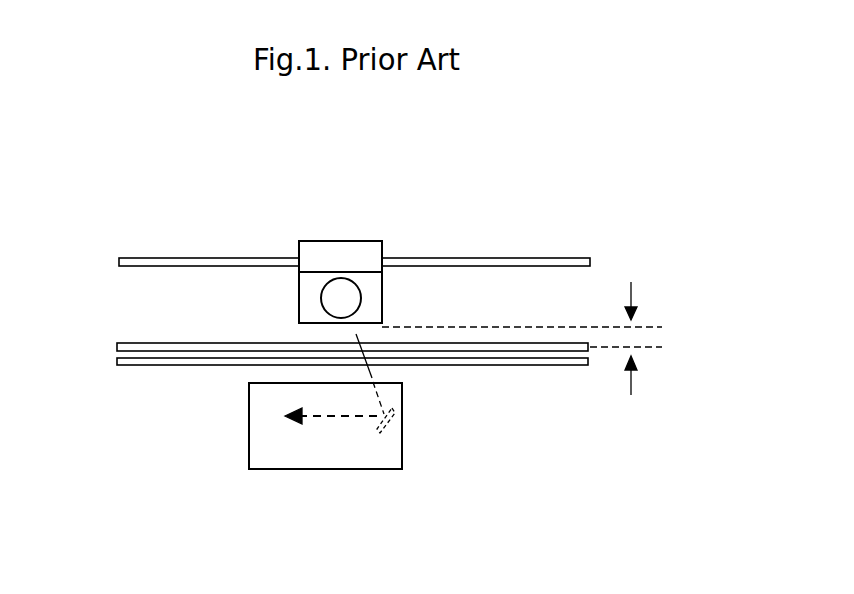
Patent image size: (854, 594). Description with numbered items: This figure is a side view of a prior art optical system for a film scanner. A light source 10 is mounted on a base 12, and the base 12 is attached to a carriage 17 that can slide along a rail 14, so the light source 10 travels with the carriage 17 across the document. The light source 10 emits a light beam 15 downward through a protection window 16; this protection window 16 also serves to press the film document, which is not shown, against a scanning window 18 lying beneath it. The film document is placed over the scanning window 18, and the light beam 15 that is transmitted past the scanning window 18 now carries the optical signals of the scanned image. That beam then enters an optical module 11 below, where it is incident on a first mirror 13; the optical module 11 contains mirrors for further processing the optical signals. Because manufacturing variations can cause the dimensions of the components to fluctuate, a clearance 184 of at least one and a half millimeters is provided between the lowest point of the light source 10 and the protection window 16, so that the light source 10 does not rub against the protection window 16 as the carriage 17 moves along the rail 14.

The light source 10 is at (352, 297).
The optical module 11 is at (352, 452).
The base 12 is at (307, 287).
The first mirror 13 is at (385, 423).
The rail 14 is at (130, 256).
The light beam 15 is at (356, 334).
The protection window 16 is at (118, 342).
The carriage 17 is at (317, 252).
The scanning window 18 is at (128, 365).
The clearance 184 is at (547, 338).